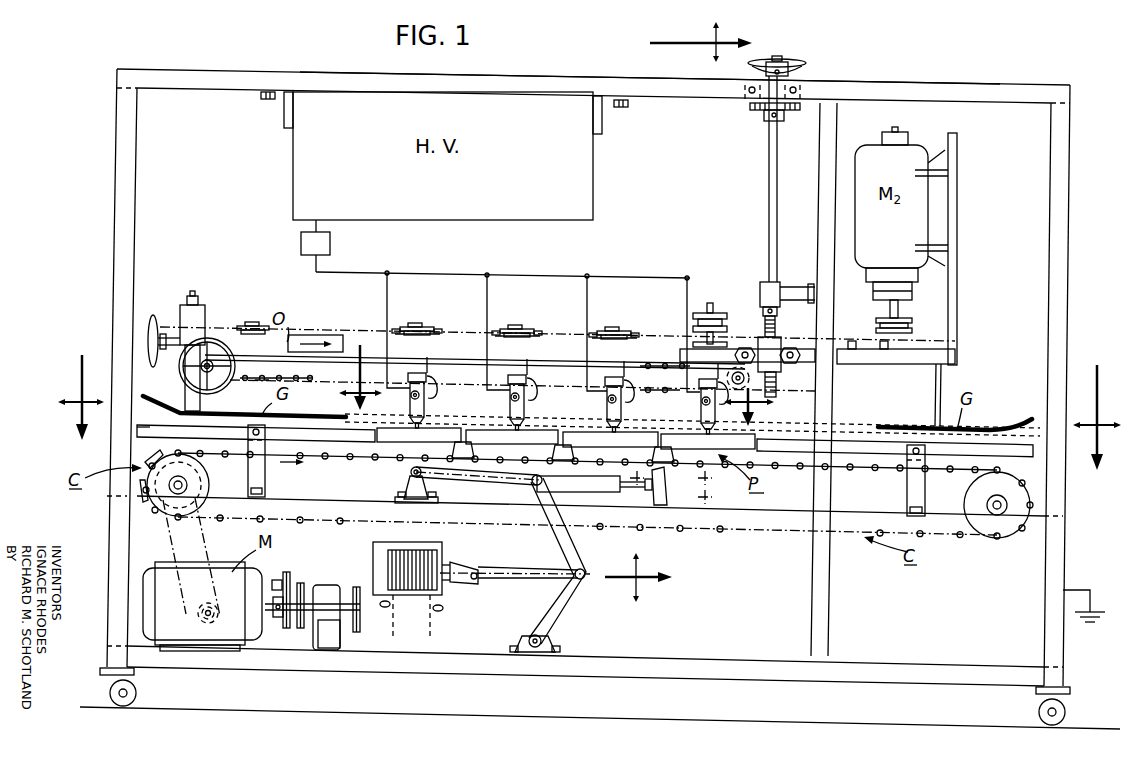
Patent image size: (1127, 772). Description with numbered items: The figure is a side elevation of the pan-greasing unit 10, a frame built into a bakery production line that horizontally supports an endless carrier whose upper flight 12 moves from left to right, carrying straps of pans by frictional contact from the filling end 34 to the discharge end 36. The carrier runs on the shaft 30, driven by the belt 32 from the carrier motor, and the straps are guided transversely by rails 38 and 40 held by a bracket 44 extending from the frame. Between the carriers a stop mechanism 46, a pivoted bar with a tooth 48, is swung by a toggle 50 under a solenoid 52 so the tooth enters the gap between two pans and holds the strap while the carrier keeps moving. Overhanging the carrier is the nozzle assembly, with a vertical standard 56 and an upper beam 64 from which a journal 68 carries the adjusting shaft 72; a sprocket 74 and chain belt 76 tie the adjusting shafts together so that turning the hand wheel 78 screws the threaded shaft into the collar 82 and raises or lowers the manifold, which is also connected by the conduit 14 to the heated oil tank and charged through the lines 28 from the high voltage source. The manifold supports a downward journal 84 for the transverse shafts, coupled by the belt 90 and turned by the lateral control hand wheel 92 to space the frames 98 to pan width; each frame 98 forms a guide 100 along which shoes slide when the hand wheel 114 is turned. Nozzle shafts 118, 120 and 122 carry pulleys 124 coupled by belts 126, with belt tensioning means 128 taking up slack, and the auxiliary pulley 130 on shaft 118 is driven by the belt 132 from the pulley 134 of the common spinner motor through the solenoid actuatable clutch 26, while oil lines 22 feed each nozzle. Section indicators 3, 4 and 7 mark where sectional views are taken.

The unit 10 is at (100, 115).
The upper flight 12 is at (378, 463).
The conduit 14 is at (185, 268).
The oil lines 22 is at (584, 402).
The solenoid actuatable clutch 26 is at (864, 294).
The lines 28 is at (386, 281).
The shaft 30 is at (184, 483).
The belt 32 is at (212, 542).
The filling end 34 is at (152, 418).
The discharge end 36 is at (1035, 430).
The rail 38 is at (358, 440).
The rail 40 is at (298, 446).
The bracket 44 is at (259, 481).
The stop mechanism 46 is at (502, 477).
The tooth 48 is at (673, 486).
The toggle 50 is at (570, 540).
The solenoid 52 is at (420, 560).
The vertical standard 56 is at (823, 188).
The upper beam 64 is at (949, 95).
The journal 68 is at (783, 290).
The adjusting shaft 72 is at (770, 181).
The sprocket 74 is at (766, 118).
The chain belt 76 is at (748, 108).
The hand wheel 78 is at (787, 62).
The collar 82 is at (771, 349).
The journal 84 is at (740, 366).
The belt 90 is at (252, 380).
The lateral control hand wheel 92 is at (188, 366).
The frame 98 is at (469, 380).
The guide 100 is at (312, 362).
The hand wheel 114 is at (153, 316).
The shaft 118 is at (713, 307).
The shaft 120 is at (414, 326).
The shaft 122 is at (252, 324).
The pulley 124 is at (263, 322).
The belt 126 is at (326, 335).
The belt tensioning means 128 is at (443, 331).
The auxiliary pulley 130 is at (693, 318).
The belt 132 is at (876, 323).
The pulley 134 is at (910, 331).
The section line 3- 3 is at (589, 423).
The section line 4- 4 is at (678, 309).
The section line 7- 7 is at (558, 385).